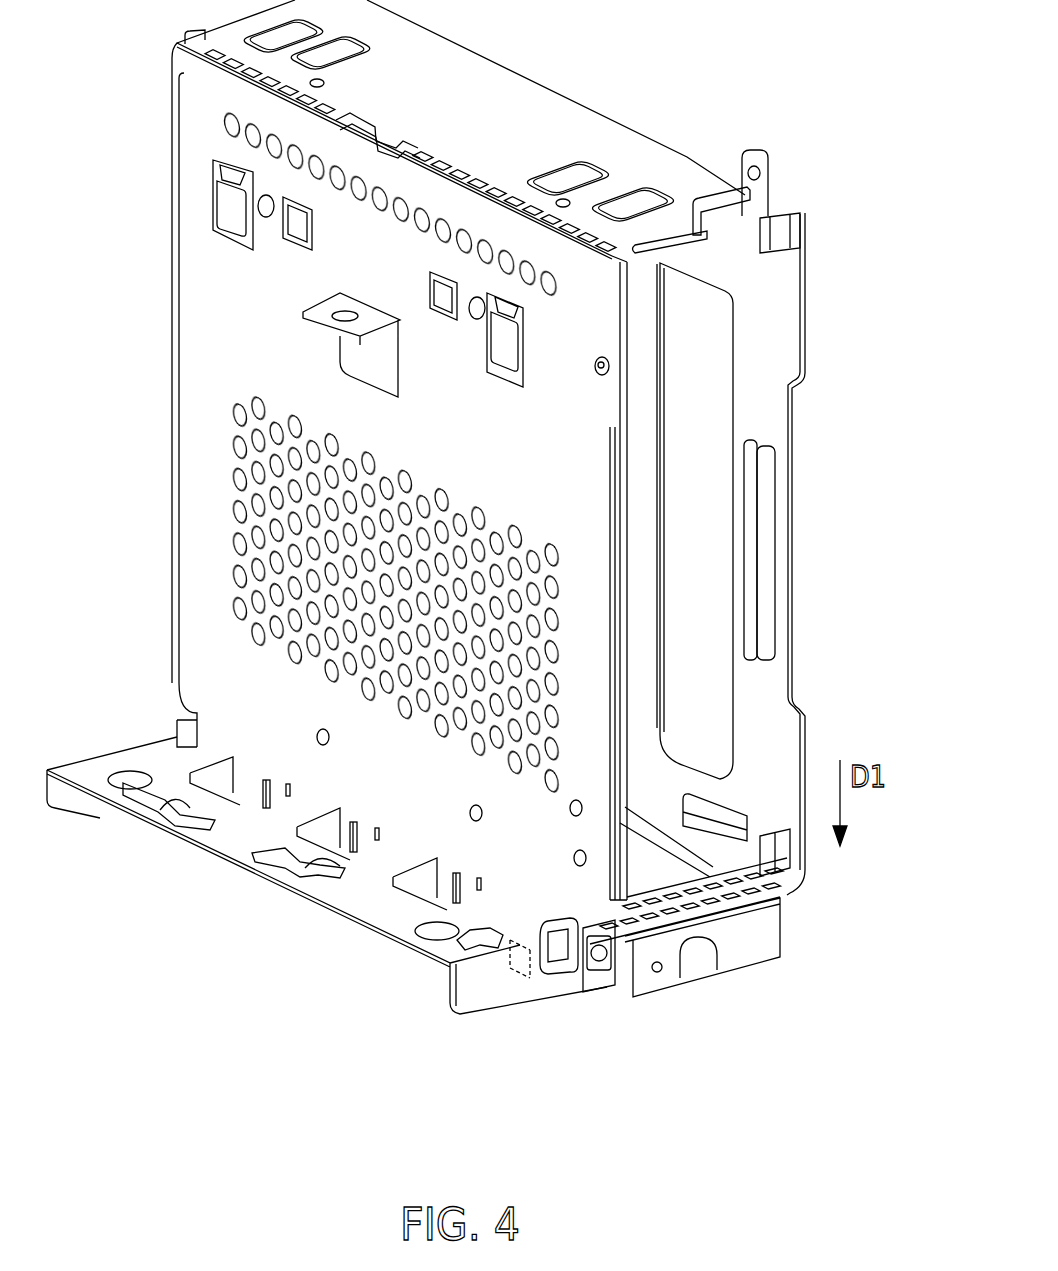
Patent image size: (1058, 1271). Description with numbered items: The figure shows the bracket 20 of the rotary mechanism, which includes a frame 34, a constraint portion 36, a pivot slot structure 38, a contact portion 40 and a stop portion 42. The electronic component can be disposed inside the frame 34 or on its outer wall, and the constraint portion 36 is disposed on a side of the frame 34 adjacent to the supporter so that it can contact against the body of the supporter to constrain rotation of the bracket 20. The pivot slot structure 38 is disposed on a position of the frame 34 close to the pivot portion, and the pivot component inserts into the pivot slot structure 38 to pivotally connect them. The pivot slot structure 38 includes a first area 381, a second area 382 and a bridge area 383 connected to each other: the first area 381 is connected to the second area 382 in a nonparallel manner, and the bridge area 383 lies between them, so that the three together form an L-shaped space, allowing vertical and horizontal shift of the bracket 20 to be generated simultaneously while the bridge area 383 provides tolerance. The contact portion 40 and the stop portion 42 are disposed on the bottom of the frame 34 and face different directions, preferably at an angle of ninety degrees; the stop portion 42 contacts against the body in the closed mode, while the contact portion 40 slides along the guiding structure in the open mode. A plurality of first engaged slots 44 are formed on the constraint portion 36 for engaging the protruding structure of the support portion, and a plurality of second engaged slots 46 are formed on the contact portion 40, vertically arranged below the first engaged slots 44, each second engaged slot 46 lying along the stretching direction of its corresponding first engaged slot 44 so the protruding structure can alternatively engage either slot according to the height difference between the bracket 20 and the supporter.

The bracket 20 is at (477, 572).
The frame 34 is at (208, 320).
The constraint portion 36 is at (517, 963).
The pivot slot structure 38 is at (640, 1026).
The first area 381 is at (545, 963).
The second area 382 is at (563, 937).
The bridge area 383 is at (562, 958).
The contact portion 40 is at (137, 786).
The stop portion 42 is at (390, 912).
The first engaged slot 44 is at (268, 795).
The second engaged slot 46 is at (288, 800).